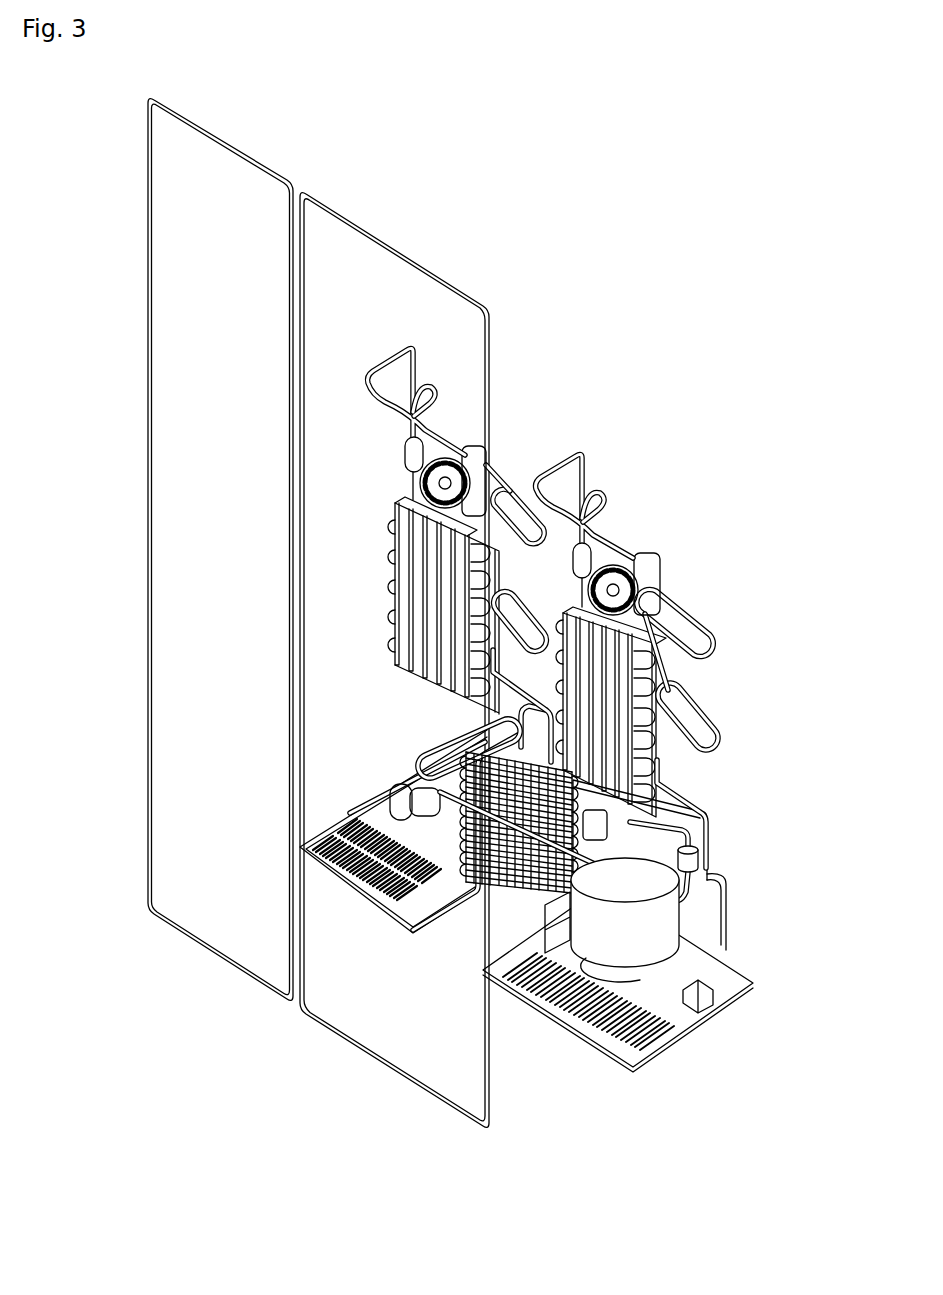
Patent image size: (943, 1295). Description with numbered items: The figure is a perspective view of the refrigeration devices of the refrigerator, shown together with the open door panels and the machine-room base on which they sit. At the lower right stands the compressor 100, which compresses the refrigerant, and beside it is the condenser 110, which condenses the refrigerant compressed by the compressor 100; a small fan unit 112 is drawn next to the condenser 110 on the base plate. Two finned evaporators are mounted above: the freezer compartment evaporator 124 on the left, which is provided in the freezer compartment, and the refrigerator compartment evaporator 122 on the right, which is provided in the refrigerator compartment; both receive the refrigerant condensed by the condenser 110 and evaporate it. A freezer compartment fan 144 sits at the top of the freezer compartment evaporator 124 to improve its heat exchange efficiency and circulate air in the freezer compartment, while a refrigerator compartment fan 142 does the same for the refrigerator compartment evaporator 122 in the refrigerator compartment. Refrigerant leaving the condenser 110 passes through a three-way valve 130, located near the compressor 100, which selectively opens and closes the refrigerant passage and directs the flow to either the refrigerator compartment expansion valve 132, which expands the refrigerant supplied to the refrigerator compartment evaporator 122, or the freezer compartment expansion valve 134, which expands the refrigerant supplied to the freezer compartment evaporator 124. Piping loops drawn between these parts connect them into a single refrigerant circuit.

The compressor 100 is at (652, 955).
The condenser 110 is at (513, 888).
The condenser fan 112 is at (427, 781).
The refrigerator compartment evaporator 122 is at (662, 688).
The freezer compartment evaporator 124 is at (405, 563).
The 3-way valve 130 is at (700, 856).
The refrigerator compartment expansion valve 132 is at (584, 543).
The freezer compartment expansion valve 134 is at (405, 448).
The refrigerator compartment fan 142 is at (648, 568).
The freezer compartment fan 144 is at (478, 456).